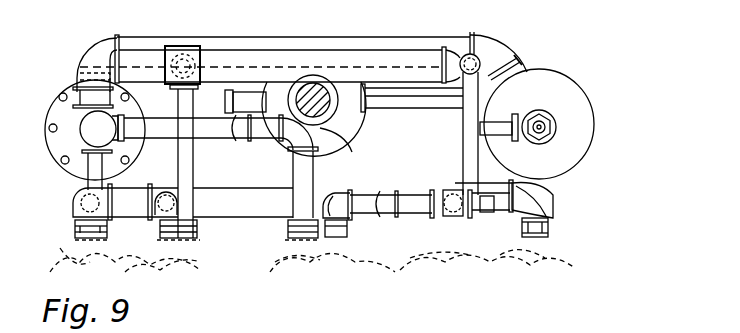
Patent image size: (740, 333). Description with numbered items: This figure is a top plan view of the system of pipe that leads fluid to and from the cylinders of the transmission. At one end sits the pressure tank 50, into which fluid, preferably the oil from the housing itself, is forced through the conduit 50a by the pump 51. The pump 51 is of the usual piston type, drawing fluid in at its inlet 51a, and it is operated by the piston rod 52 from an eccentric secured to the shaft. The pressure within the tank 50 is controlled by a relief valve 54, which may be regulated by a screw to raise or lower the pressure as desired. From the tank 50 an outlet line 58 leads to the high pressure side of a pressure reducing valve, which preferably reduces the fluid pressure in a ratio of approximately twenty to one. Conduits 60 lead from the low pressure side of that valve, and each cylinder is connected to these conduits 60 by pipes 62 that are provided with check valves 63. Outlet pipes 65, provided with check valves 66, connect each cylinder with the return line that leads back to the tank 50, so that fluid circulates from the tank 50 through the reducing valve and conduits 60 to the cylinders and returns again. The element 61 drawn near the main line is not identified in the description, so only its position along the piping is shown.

The pressure tank 50 is at (583, 126).
The conduit 50a is at (436, 110).
The pump 51 is at (354, 126).
The inlet 51a is at (246, 96).
The piston rod 52 is at (335, 143).
The relief valve 54 is at (549, 112).
The outlet line 58 is at (333, 29).
The conduits 60 is at (219, 140).
The main pipe 61 is at (402, 55).
The pipes 62 is at (87, 185).
The check valves 63 is at (107, 232).
The outlet pipes 65 is at (74, 220).
The check valves 66 is at (78, 232).